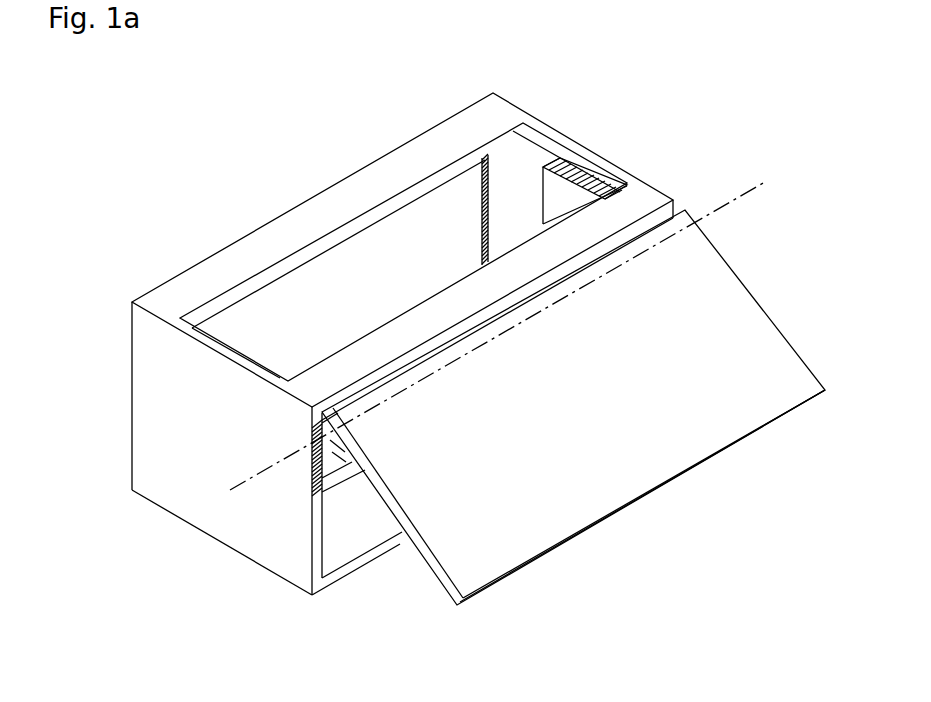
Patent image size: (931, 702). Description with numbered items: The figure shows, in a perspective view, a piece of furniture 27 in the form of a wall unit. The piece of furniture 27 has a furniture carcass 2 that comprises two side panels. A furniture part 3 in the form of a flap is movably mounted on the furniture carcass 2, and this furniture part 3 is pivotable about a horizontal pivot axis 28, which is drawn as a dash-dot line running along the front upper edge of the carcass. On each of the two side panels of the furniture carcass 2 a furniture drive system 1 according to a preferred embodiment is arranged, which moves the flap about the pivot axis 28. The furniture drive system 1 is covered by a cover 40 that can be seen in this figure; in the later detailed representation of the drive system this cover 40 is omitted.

The furniture drive system 1 is at (310, 505).
The furniture carcass 2 is at (182, 393).
The furniture part 3 is at (733, 293).
The piece of furniture 27 is at (280, 98).
The horizontal pivot axis 28 is at (730, 200).
The cover 40 is at (565, 198).